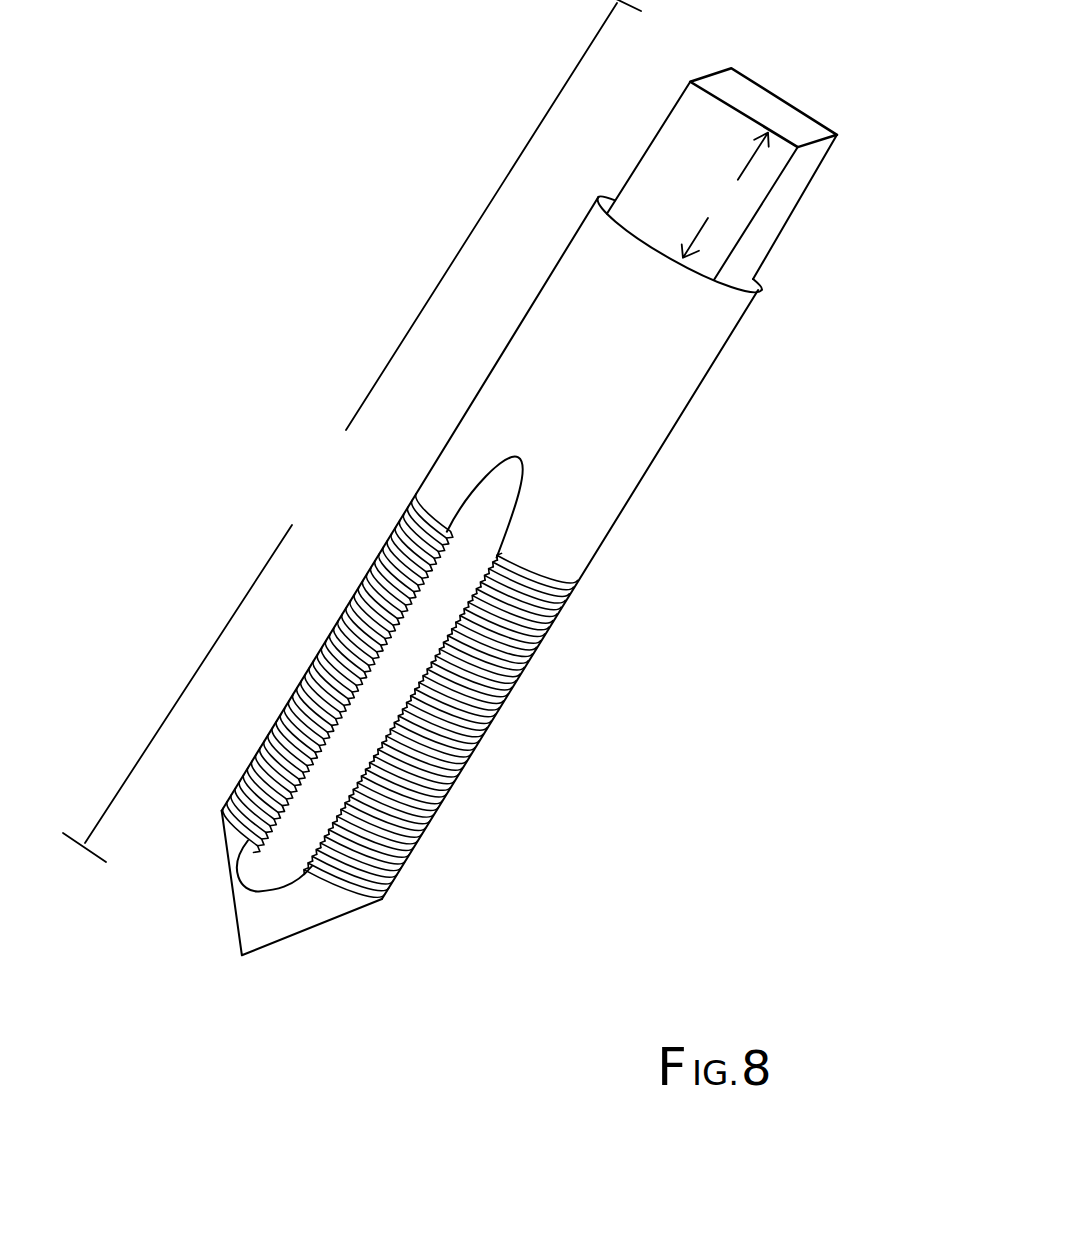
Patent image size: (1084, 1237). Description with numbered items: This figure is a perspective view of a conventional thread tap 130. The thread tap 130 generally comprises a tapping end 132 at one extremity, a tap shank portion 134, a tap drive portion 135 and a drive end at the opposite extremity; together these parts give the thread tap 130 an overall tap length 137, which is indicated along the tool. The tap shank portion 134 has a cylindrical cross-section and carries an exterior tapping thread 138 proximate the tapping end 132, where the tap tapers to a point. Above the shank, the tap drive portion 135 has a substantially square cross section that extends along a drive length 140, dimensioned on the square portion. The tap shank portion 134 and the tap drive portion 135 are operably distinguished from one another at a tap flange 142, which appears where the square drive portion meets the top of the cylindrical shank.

The thread tap 130 is at (492, 524).
The tapping end 132 is at (283, 945).
The tap shank portion 134 is at (595, 517).
The tap drive portion 135 is at (762, 149).
The tap length 137 is at (352, 431).
The exterior tapping thread 138 is at (445, 793).
The drive length 140 is at (718, 190).
The tap flange 142 is at (752, 288).